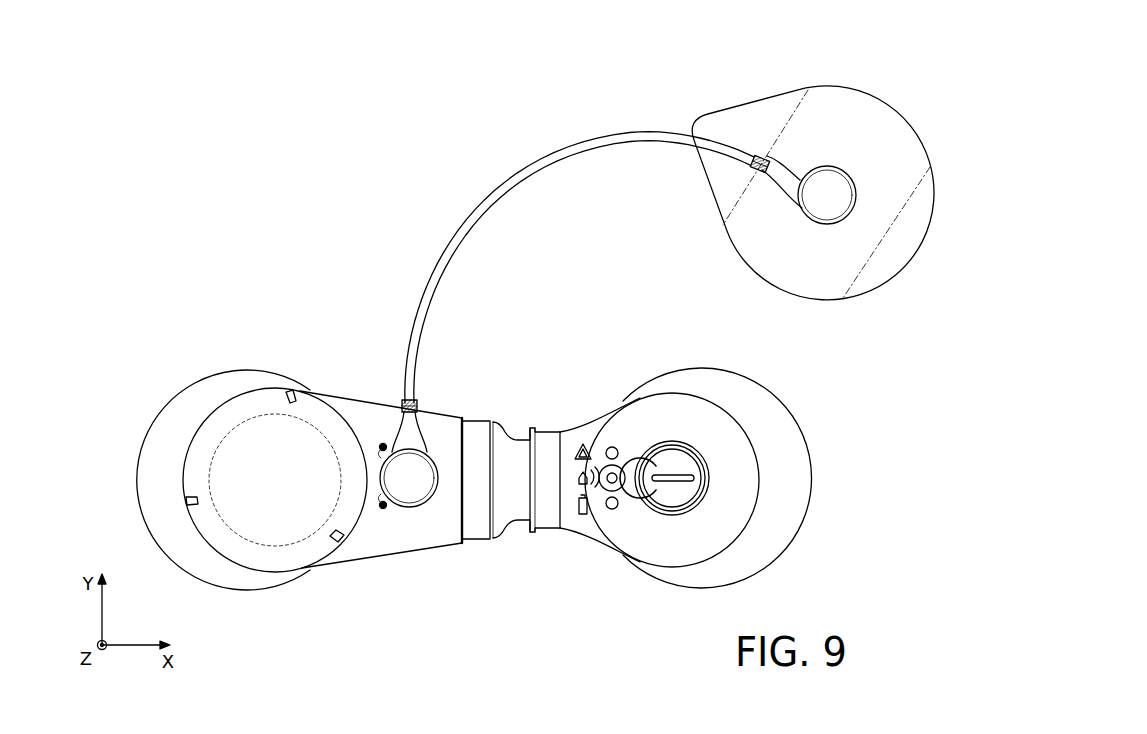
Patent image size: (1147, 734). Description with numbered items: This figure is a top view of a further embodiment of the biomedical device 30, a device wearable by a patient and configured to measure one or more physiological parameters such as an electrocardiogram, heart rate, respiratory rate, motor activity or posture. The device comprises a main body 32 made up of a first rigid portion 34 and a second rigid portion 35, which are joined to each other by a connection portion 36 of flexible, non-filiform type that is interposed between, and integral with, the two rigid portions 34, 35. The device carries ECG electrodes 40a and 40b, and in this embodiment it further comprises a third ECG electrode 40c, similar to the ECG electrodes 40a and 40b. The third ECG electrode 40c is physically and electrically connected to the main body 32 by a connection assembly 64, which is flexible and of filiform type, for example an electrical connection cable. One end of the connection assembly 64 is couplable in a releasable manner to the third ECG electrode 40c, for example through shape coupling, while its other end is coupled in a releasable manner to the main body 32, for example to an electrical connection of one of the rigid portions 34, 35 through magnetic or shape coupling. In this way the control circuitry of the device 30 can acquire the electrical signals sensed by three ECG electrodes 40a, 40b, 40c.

The biomedical device 30 is at (290, 296).
The main body 32 is at (418, 536).
The first rigid portion 34 is at (373, 418).
The second rigid portion 35 is at (662, 422).
The connection portion 36 is at (480, 418).
The ECG electrode 40a is at (195, 405).
The ECG electrode 40b is at (792, 472).
The third ECG electrode 40c is at (877, 118).
The connection assembly 64 is at (495, 190).